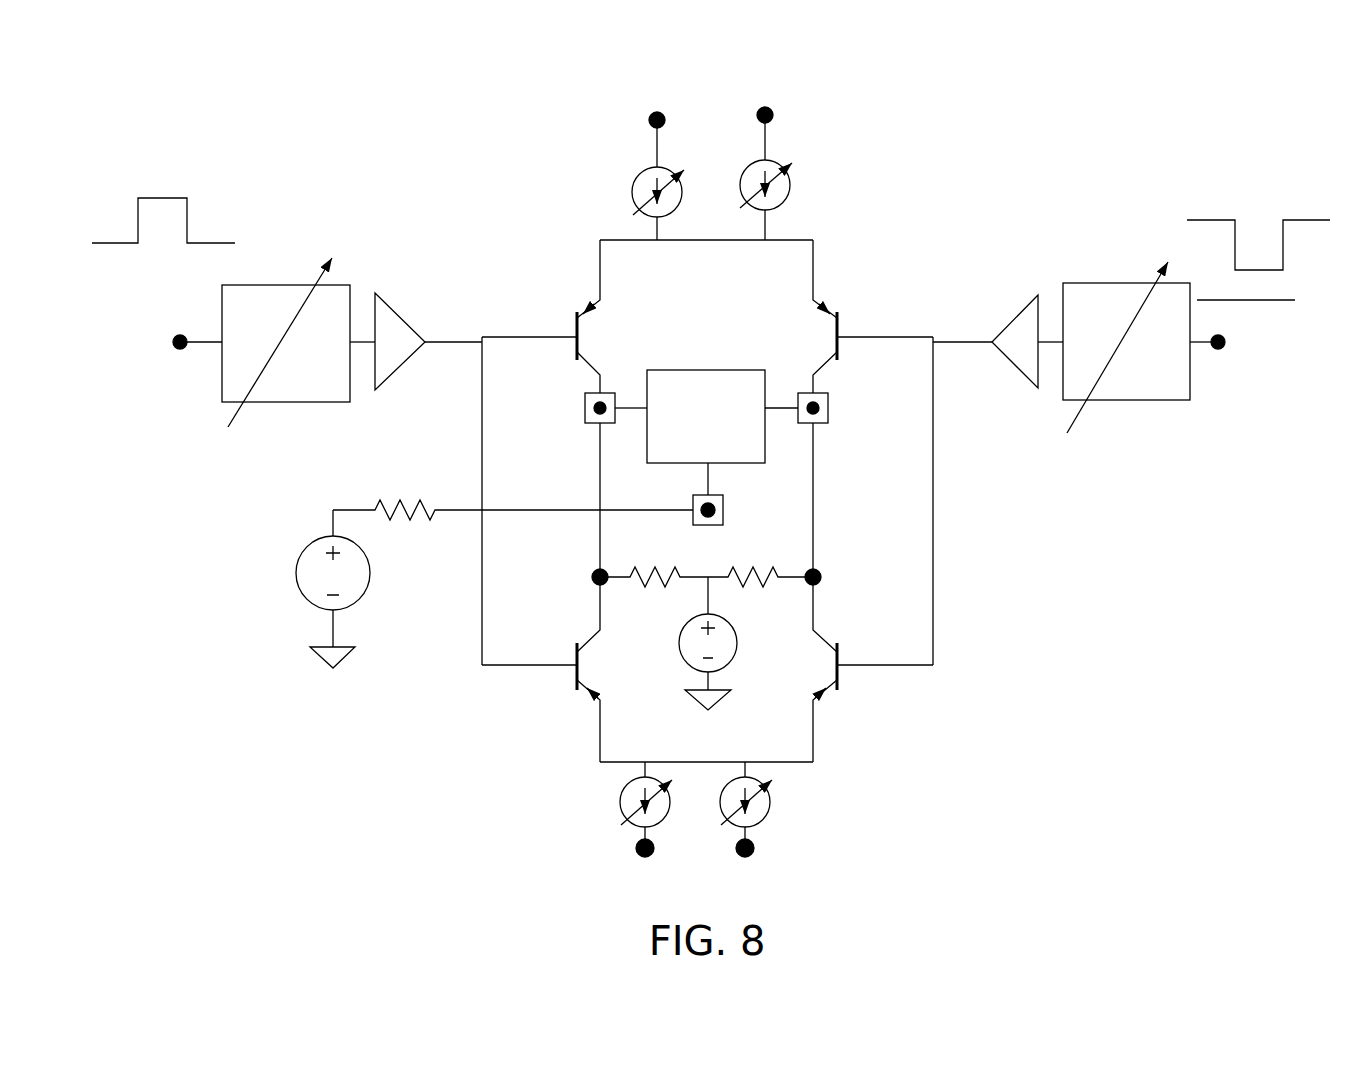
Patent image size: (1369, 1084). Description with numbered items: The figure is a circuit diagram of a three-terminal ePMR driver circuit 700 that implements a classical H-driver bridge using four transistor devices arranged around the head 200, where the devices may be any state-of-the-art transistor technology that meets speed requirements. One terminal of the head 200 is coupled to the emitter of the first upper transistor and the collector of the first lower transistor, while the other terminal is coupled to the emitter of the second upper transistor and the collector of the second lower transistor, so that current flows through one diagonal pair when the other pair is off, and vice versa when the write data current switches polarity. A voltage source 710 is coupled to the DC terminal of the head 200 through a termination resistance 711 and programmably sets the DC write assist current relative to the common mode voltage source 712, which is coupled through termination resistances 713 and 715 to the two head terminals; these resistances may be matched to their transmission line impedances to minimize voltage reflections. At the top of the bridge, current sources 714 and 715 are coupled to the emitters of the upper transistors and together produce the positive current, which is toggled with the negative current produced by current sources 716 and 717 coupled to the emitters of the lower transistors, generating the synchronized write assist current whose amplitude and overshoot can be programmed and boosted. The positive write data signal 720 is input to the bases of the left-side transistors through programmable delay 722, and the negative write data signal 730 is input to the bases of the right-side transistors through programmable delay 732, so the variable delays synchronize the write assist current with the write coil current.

The driver circuit 700 is at (387, 97).
The head 200 is at (710, 327).
The voltage source 710 is at (285, 548).
The termination resistance 711 is at (368, 478).
The common mode voltage source 712 is at (673, 662).
The termination resistance 713 is at (648, 552).
The current source 714 is at (625, 159).
The current source / termination resistance 715 is at (799, 141).
The current source 716 is at (623, 835).
The current source 717 is at (770, 835).
The positive write data signal 720 is at (142, 342).
The programmable delay 722 is at (200, 402).
The negative write data signal 730 is at (1262, 342).
The programmable delay 732 is at (1127, 425).